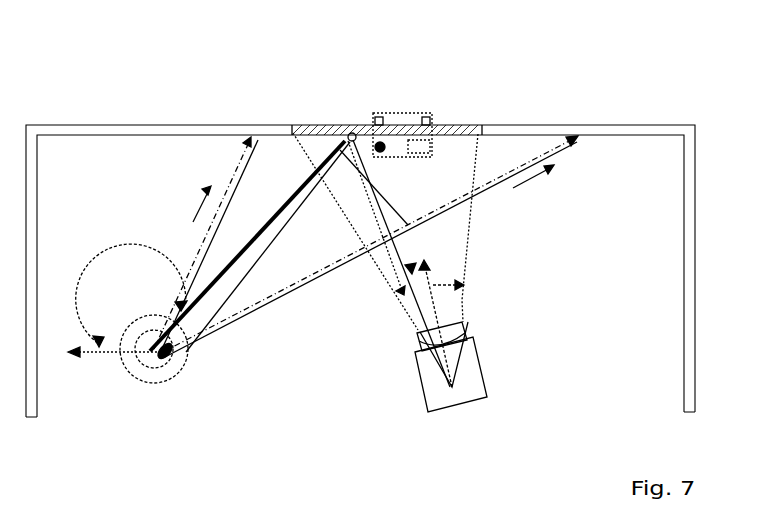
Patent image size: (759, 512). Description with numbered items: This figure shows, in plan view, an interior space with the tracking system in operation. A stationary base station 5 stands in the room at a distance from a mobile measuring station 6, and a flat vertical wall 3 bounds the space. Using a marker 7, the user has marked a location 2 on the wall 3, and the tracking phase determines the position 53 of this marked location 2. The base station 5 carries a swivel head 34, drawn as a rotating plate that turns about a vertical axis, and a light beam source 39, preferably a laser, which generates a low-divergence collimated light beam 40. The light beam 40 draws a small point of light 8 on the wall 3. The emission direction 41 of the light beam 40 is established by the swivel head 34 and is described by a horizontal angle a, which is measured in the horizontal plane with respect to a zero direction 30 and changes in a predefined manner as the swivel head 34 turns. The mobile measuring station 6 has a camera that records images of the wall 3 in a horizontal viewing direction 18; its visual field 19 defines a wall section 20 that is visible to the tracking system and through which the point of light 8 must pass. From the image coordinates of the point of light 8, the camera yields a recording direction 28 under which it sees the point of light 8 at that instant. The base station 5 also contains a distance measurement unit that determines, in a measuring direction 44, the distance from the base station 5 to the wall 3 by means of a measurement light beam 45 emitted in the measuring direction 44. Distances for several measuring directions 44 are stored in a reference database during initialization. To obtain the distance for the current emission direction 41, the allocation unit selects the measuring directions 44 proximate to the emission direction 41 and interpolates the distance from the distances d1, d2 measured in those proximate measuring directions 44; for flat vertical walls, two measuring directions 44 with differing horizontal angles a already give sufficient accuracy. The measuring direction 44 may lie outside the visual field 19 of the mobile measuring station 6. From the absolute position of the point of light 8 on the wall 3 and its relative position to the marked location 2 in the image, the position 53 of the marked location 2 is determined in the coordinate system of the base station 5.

The location 2 is at (390, 133).
The wall 3 is at (523, 182).
The base station 5 is at (228, 432).
The mobile measuring station 6 is at (490, 430).
The marker 7 is at (432, 130).
The point of light 8 is at (355, 128).
The viewing direction 18 is at (410, 332).
The visual field 19 is at (410, 300).
The wall section 20 is at (508, 127).
The recording direction 28 is at (397, 247).
The zero direction 30 is at (110, 353).
The swivel head 34 is at (153, 377).
The light beam source 39 is at (165, 365).
The light beam 40 is at (292, 205).
The emission direction 41 is at (255, 220).
The measuring direction 44 is at (193, 222).
The measurement light beam 45 is at (218, 197).
The position 53 is at (337, 205).
The horizontal angle a is at (142, 292).
The distance d1 is at (187, 285).
The distance d2 is at (240, 320).